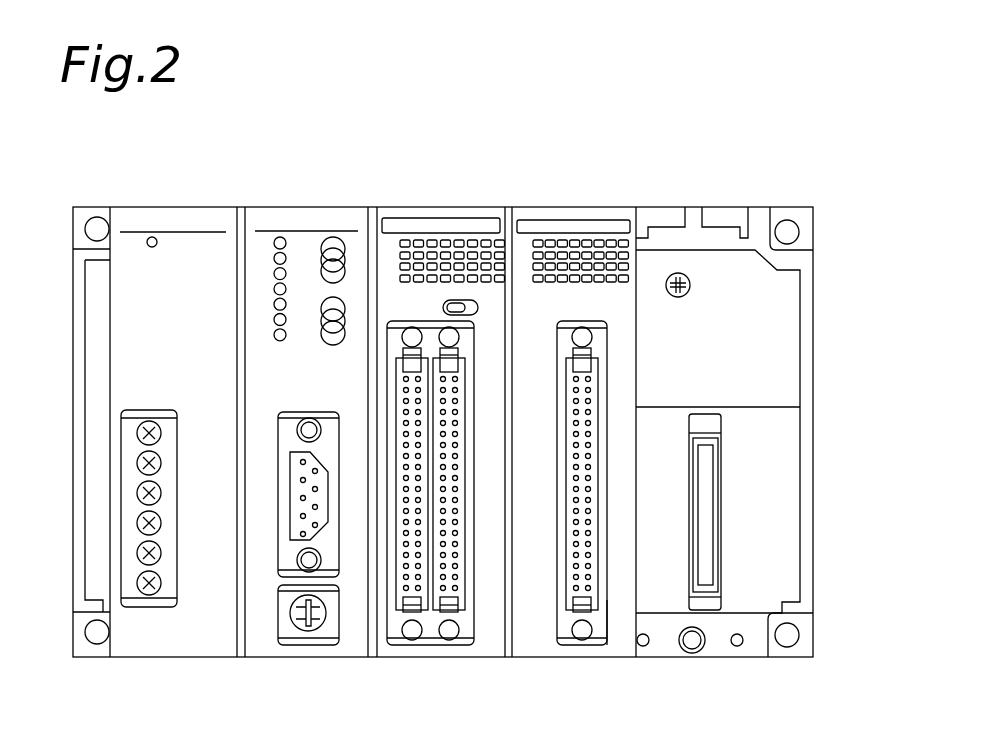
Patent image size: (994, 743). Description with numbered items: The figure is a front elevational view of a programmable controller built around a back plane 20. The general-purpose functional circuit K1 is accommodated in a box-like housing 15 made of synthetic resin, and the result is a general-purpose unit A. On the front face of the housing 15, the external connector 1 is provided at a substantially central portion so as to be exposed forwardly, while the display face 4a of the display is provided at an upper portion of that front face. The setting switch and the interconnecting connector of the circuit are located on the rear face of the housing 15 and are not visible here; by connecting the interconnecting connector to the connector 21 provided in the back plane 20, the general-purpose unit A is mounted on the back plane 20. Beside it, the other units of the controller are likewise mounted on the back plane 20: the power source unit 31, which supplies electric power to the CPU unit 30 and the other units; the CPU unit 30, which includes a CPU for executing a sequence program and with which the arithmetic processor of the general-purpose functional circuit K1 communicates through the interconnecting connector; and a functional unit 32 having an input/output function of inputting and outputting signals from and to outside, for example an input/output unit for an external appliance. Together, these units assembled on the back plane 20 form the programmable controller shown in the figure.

The general-purpose functional circuit K1 is at (551, 205).
The power source unit 31 is at (125, 378).
The CPU unit 30 is at (259, 645).
The functional unit 32 is at (484, 645).
The housing 15 is at (533, 645).
The display face 4a is at (598, 240).
The external connector 1 is at (582, 630).
The general-purpose unit A is at (623, 645).
The back plane 20 is at (785, 355).
The connector 21 is at (720, 503).